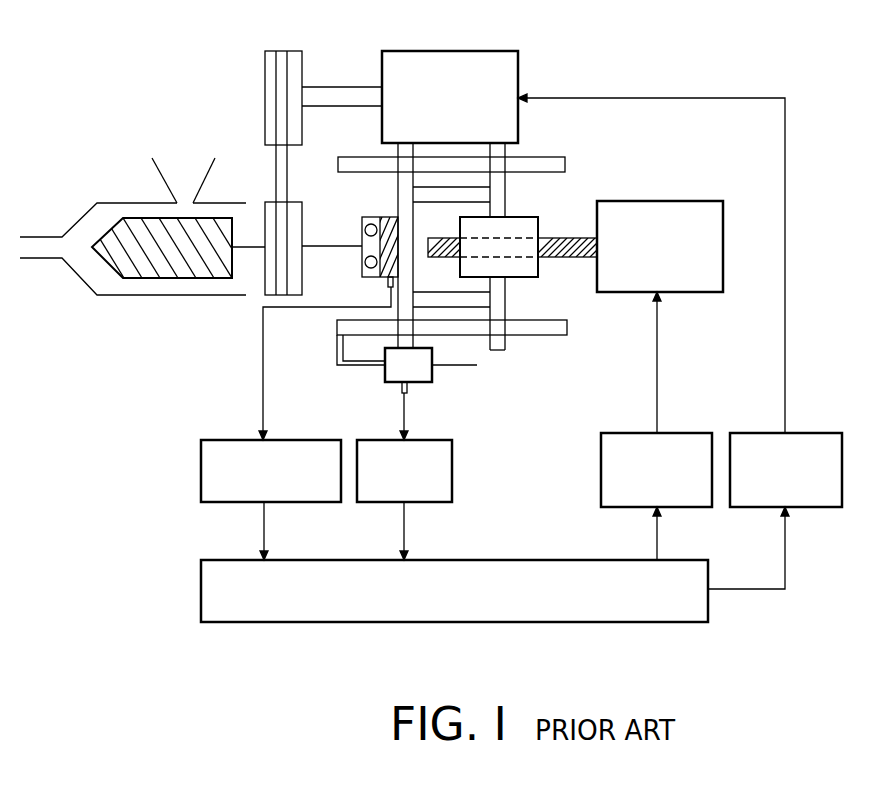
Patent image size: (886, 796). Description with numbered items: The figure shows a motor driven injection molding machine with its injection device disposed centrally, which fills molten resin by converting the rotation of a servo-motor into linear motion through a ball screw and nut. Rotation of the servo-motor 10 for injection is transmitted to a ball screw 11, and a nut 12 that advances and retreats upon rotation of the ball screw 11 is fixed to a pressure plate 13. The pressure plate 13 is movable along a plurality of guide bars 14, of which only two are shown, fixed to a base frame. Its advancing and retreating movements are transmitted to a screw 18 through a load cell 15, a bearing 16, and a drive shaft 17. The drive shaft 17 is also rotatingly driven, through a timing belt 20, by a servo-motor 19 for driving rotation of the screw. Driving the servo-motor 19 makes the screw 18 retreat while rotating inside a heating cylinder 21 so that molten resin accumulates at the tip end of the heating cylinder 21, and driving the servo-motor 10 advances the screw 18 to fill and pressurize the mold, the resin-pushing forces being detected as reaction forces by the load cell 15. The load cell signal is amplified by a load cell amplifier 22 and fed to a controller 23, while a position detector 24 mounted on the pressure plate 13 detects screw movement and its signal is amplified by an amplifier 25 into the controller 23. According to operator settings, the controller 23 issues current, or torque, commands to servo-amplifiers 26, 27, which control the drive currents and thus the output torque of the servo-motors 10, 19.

The servo-motor for injection 10 is at (660, 201).
The ball screw 11 is at (562, 238).
The nut 12 is at (527, 217).
The pressure plate 13 is at (505, 296).
The guide bars 14 is at (352, 157).
The load cell 15 is at (395, 215).
The bearing 16 is at (362, 224).
The drive shaft 17 is at (334, 248).
The screw 18 is at (200, 262).
The servo-motor for driving rotation of the screw 19 is at (460, 50).
The timing belt 20 is at (276, 167).
The heating cylinder 21 is at (133, 297).
The load cell amplifier 22 is at (201, 466).
The controller 23 is at (518, 560).
The position detector 24 is at (420, 382).
The amplifier 25 is at (452, 470).
The servo-amplifier 26 is at (601, 472).
The servo-amplifier 27 is at (822, 433).